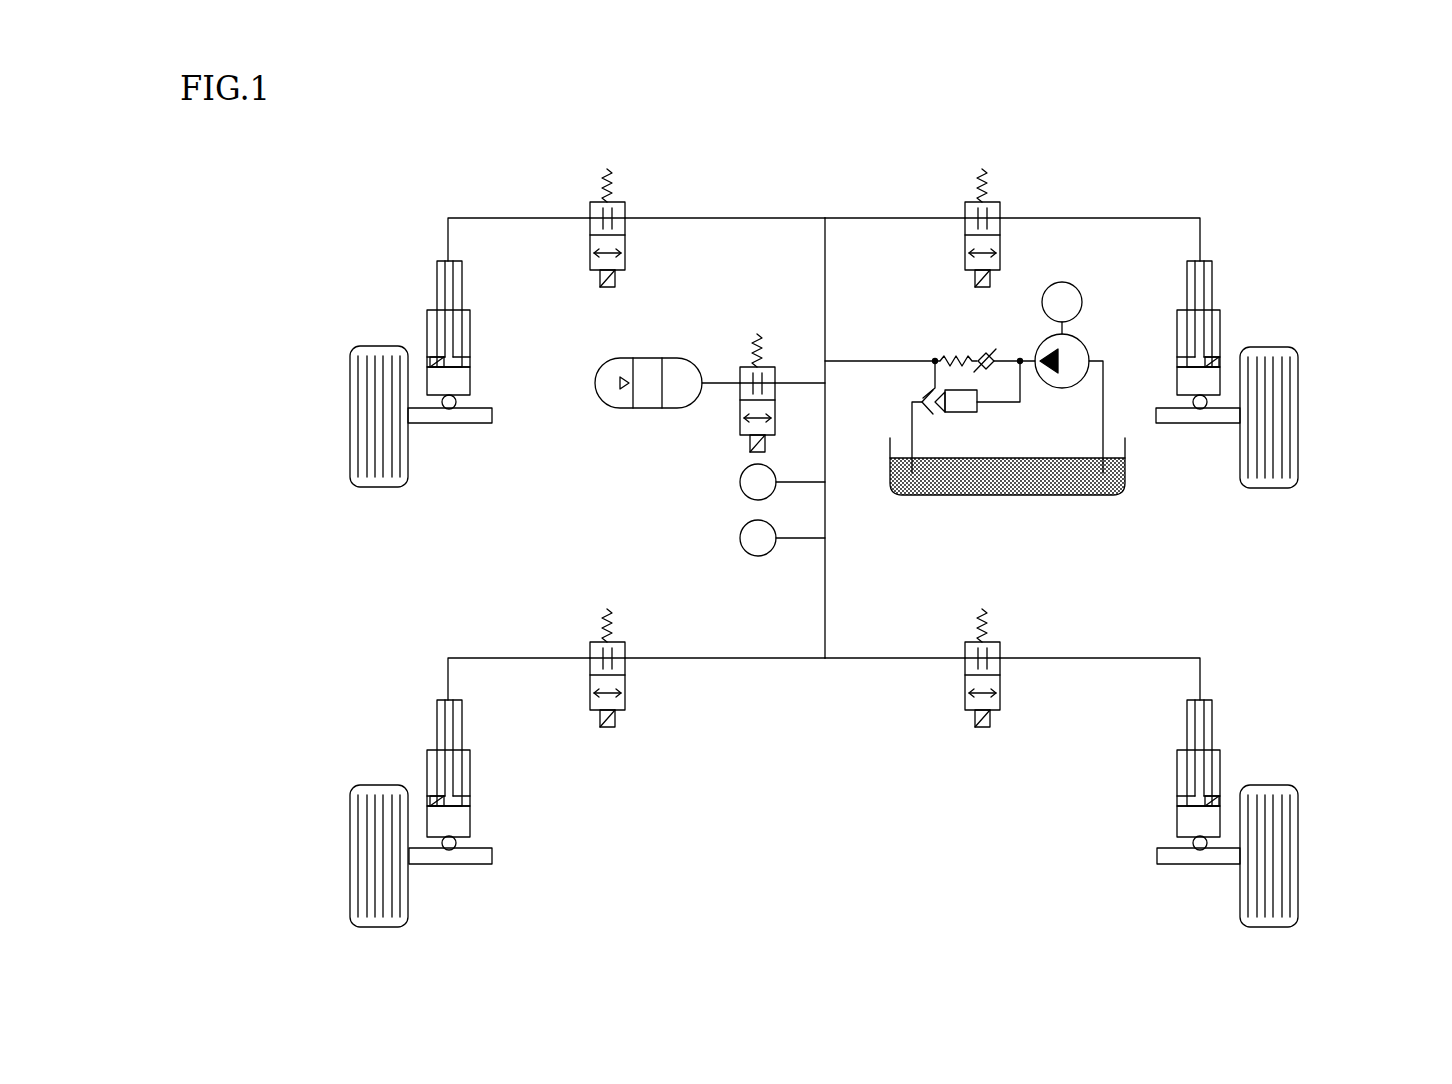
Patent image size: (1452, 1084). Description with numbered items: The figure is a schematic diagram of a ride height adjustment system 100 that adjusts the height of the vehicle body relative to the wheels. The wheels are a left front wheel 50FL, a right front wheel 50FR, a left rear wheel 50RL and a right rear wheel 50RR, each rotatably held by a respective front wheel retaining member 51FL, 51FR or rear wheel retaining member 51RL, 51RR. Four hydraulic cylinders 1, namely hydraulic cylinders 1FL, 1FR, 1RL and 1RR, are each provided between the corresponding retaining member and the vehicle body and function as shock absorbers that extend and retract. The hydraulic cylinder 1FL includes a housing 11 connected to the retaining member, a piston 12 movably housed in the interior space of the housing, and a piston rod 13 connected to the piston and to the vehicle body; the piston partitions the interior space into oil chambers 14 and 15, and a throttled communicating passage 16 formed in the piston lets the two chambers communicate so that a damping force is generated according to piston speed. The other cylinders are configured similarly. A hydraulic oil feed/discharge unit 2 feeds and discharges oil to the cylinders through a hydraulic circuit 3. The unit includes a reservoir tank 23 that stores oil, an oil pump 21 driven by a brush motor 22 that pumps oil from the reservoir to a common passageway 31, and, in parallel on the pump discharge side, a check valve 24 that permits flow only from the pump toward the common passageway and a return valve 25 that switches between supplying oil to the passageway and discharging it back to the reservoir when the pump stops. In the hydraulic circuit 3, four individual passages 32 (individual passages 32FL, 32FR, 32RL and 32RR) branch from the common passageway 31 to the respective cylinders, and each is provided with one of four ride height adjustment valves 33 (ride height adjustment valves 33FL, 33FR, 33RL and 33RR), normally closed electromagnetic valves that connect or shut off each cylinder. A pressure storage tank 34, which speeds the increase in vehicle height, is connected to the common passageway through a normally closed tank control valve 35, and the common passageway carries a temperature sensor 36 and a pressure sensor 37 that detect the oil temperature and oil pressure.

The ride height adjustment system 100 is at (1297, 154).
The hydraulic circuit 3 is at (801, 197).
The common passageway 31 is at (826, 267).
The individual passage 32FL is at (520, 218).
The individual passage 32FR is at (1090, 218).
The individual passage 32RL is at (520, 658).
The individual passage 32RR is at (1090, 658).
The individual passages 32 is at (636, 212).
The ride height adjustment valve 33FL is at (626, 210).
The ride height adjustment valve 33FR is at (1001, 210).
The ride height adjustment valve 33RL is at (626, 650).
The ride height adjustment valve 33RR is at (1001, 650).
The ride height adjustment valves 33 is at (650, 207).
The hydraulic cylinder 1FL is at (422, 267).
The hydraulic cylinder 1FR is at (1222, 323).
The hydraulic cylinder 1RL is at (427, 765).
The hydraulic cylinder 1RR is at (1222, 763).
The hydraulic cylinders 1 is at (418, 308).
The housing 11 is at (470, 382).
The piston 12 is at (472, 360).
The piston rod 13 is at (463, 273).
The oil chamber 14 is at (442, 382).
The oil chamber 15 is at (433, 322).
The communicating passage 16 is at (435, 358).
The left front wheel 50FL is at (350, 433).
The right front wheel 50FR is at (1298, 432).
The left rear wheel 50RL is at (350, 870).
The right rear wheel 50RR is at (1298, 865).
The front wheel retaining member 51FL is at (452, 425).
The front wheel retaining member 51FR is at (1190, 426).
The rear wheel retaining member 51RL is at (452, 865).
The rear wheel retaining member 51RR is at (1192, 865).
The pressure storage tank 34 is at (672, 358).
The tank control valve 35 is at (770, 366).
The temperature sensor 36 is at (740, 538).
The pressure sensor 37 is at (740, 482).
The hydraulic oil feed/discharge unit 2 is at (1129, 509).
The oil pump 21 is at (1086, 350).
The brush motor 22 is at (1082, 297).
The reservoir tank 23 is at (988, 497).
The check valve 24 is at (956, 351).
The return valve 25 is at (965, 414).